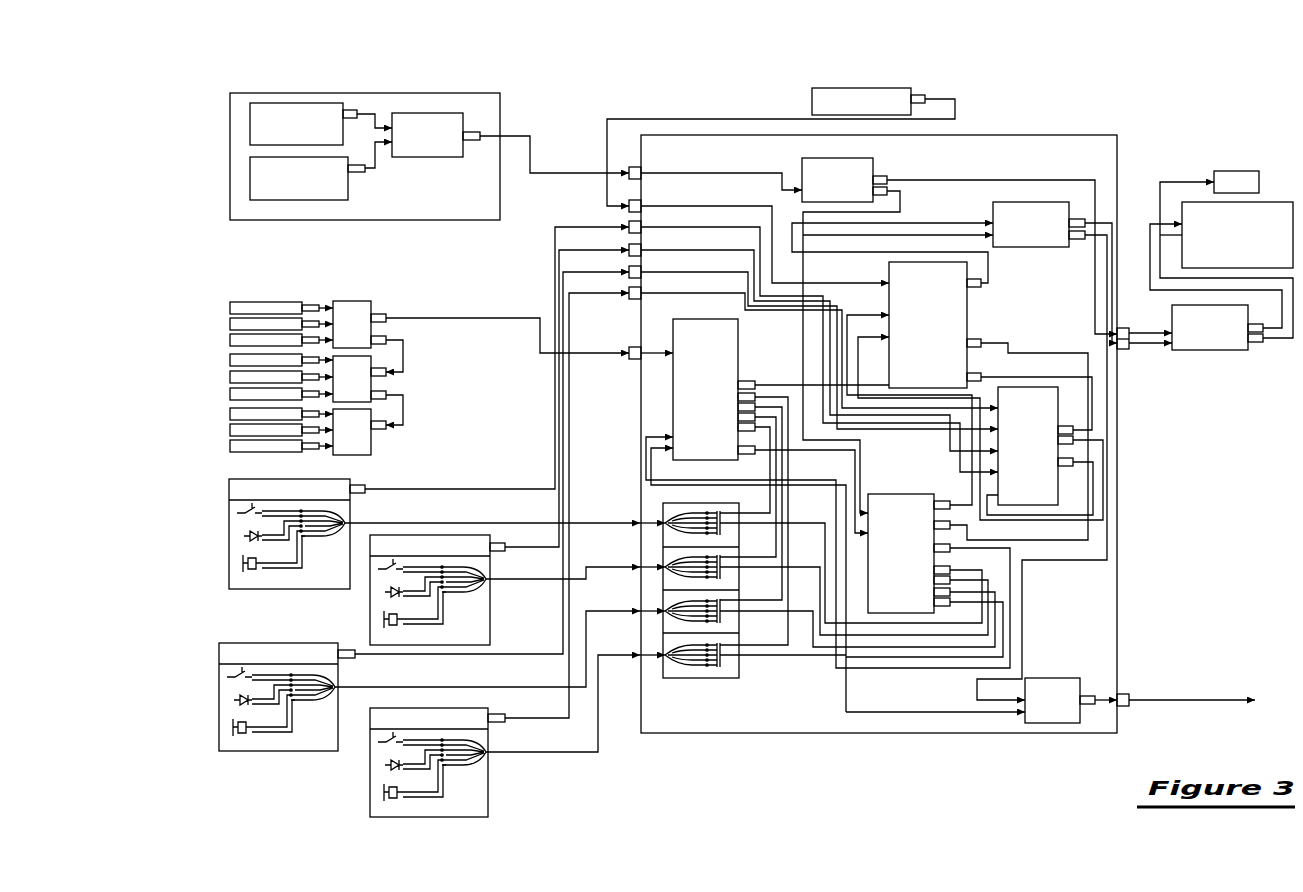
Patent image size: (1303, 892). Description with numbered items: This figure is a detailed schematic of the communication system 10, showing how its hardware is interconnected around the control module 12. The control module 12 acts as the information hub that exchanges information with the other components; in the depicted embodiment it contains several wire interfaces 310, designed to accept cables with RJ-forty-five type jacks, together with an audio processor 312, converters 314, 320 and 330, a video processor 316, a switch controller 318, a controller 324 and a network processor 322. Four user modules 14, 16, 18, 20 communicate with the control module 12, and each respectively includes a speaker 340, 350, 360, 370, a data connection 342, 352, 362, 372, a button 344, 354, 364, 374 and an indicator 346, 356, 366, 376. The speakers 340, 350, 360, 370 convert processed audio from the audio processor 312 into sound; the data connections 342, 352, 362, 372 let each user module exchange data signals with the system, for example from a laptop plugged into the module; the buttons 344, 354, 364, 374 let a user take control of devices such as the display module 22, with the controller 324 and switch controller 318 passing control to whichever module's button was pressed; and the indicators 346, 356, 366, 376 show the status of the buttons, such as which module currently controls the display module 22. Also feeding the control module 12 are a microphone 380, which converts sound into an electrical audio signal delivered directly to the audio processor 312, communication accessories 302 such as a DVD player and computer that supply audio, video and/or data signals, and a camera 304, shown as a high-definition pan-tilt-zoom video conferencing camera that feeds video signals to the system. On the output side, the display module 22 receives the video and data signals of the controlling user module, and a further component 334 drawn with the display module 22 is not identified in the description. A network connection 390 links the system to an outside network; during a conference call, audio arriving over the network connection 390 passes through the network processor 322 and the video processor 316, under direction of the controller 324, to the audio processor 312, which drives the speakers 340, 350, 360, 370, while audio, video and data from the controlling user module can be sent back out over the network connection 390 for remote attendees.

The communication system 10 is at (1097, 99).
The control module 12 is at (924, 434).
The user module 14 is at (485, 580).
The user module 16 is at (410, 537).
The user module 18 is at (486, 465).
The user module 20 is at (413, 433).
The display module 22 is at (1283, 202).
The communication accessory 302 is at (465, 222).
The camera 304 is at (812, 100).
The wire interfaces 310 is at (688, 681).
The audio processor 312 is at (673, 411).
The converter 314 is at (878, 164).
The video processor 316 is at (972, 327).
The switch controller 318 is at (1062, 402).
The converter 320 is at (1052, 249).
The network processor 322 is at (1064, 678).
The controller 324 is at (908, 494).
The converter 330 is at (1220, 352).
The user input 334 is at (1232, 171).
The speaker 340 is at (388, 786).
The data connection 342 is at (497, 714).
The button 344 is at (386, 746).
The indicator 346 is at (386, 767).
The speaker 350 is at (237, 719).
The data connection 352 is at (350, 648).
The button 354 is at (235, 681).
The indicator 356 is at (235, 701).
The speaker 360 is at (409, 633).
The data connection 362 is at (497, 543).
The button 364 is at (387, 573).
The indicator 366 is at (387, 595).
The speaker 370 is at (243, 570).
The data connection 372 is at (357, 485).
The button 374 is at (238, 516).
The indicator 376 is at (244, 541).
The microphone 380 is at (302, 275).
The network connection 390 is at (1123, 692).